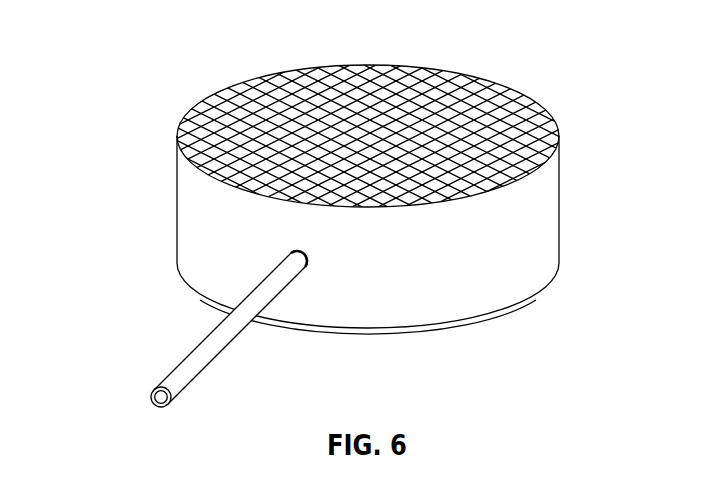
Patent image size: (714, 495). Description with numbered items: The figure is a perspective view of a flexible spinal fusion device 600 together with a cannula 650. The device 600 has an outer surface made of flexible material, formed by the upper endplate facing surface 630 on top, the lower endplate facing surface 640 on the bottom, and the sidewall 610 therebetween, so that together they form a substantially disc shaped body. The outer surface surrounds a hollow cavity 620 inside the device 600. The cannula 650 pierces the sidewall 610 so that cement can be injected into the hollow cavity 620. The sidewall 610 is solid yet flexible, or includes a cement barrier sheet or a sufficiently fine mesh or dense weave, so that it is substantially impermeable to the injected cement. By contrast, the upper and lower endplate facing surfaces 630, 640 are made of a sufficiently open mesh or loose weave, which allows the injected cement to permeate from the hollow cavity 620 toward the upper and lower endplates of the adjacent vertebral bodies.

The flexible spinal fusion device 600 is at (148, 57).
The sidewall 610 is at (150, 202).
The hollow cavity 620 is at (545, 208).
The upper endplate facing surface 630 is at (350, 45).
The lower endplate facing surface 640 is at (378, 348).
The cannula 650 is at (182, 372).